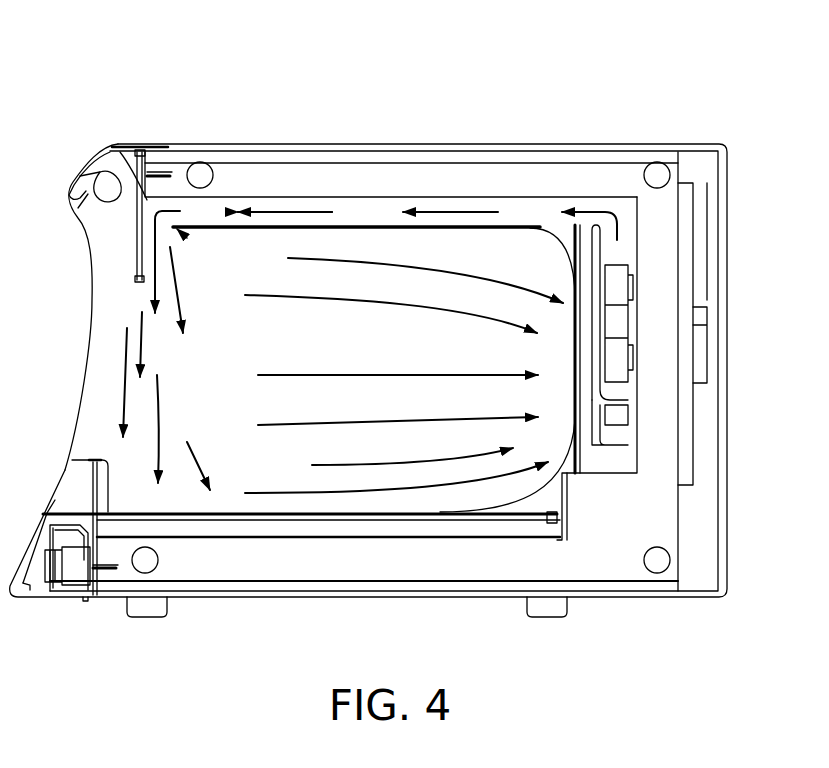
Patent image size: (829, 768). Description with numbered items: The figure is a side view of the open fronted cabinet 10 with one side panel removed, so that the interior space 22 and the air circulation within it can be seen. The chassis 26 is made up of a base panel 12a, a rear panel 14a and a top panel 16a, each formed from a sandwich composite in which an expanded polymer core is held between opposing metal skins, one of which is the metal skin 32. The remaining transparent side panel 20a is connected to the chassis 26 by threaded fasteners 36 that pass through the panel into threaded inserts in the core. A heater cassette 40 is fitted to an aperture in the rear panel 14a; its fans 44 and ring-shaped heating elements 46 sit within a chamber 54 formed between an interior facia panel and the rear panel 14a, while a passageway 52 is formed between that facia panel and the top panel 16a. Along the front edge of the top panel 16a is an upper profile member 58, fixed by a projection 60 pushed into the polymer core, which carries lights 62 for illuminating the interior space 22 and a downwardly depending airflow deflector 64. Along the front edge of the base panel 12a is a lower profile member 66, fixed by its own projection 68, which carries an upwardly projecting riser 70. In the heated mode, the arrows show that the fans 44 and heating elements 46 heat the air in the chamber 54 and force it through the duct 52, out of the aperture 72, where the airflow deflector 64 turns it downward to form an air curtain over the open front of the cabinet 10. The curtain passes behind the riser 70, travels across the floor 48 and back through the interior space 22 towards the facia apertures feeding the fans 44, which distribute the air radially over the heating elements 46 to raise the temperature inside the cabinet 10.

The cabinet 10 is at (425, 85).
The base panel 12a is at (468, 568).
The rear panel 14a is at (670, 398).
The top panel 16a is at (478, 172).
The side panel 20a is at (92, 328).
The interior space 22 is at (321, 358).
The chassis 26 is at (657, 522).
The metal skin 32 is at (233, 229).
The threaded fasteners 36 is at (200, 175).
The heater cassette 40 is at (712, 273).
The fans 44 is at (620, 362).
The heating elements 46 is at (594, 227).
The floor 48 is at (310, 522).
The passageway 52 is at (369, 214).
The chamber 54 is at (627, 465).
The upper profile member 58 is at (115, 144).
The projection 60 is at (160, 170).
The lights 62 is at (103, 192).
The airflow deflector 64 is at (137, 253).
The lower profile member 66 is at (30, 583).
The projection 68 is at (110, 568).
The riser 70 is at (93, 490).
The aperture 72 is at (115, 149).